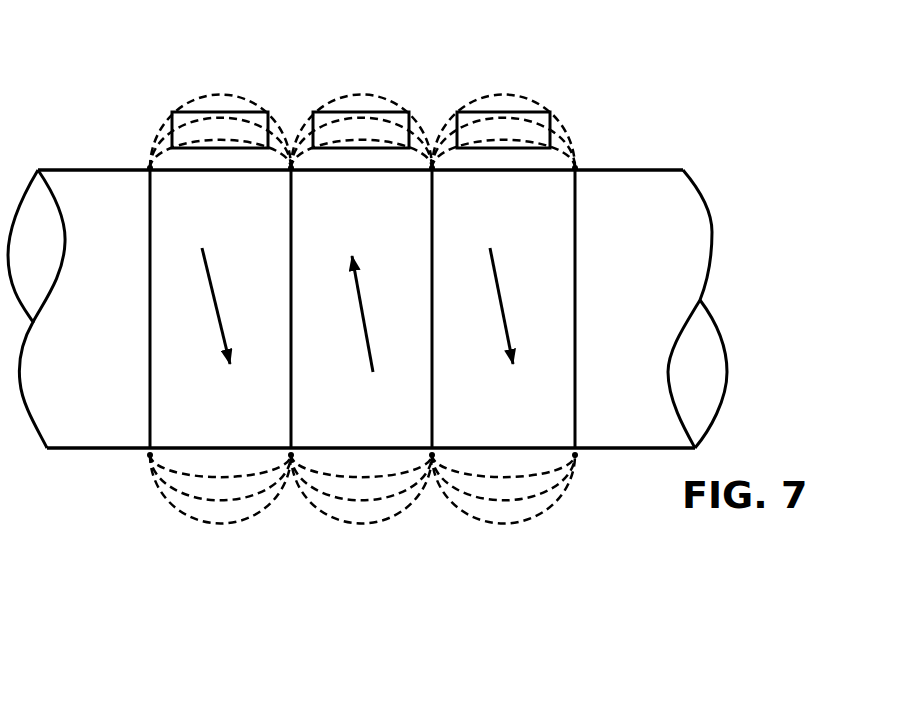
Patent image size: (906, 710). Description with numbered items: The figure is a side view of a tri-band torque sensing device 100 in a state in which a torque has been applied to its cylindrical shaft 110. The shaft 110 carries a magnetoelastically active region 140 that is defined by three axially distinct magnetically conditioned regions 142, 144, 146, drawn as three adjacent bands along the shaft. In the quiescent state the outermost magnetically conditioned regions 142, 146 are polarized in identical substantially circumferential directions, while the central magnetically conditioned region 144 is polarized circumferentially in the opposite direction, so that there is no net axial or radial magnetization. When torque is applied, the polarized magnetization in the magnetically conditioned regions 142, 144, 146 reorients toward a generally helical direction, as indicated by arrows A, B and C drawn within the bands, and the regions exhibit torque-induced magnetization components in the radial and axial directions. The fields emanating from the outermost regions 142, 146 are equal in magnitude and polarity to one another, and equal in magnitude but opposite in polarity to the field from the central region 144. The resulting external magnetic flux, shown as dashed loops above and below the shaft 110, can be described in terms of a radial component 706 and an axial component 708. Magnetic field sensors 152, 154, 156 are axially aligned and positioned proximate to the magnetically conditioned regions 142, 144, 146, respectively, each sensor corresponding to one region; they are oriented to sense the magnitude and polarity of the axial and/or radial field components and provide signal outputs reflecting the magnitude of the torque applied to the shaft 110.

The torque sensing device 100 is at (683, 116).
The cylindrical shaft 110 is at (673, 248).
The magnetoelastically active region 140 is at (302, 522).
The magnetically conditioned region 142 is at (232, 423).
The central magnetically conditioned region 144 is at (350, 420).
The magnetically conditioned region 146 is at (503, 420).
The magnetic field sensor 152 is at (232, 128).
The magnetic field sensor 154 is at (358, 128).
The magnetic field sensor 156 is at (502, 128).
The radial component 706 is at (151, 160).
The axial component 708 is at (222, 95).